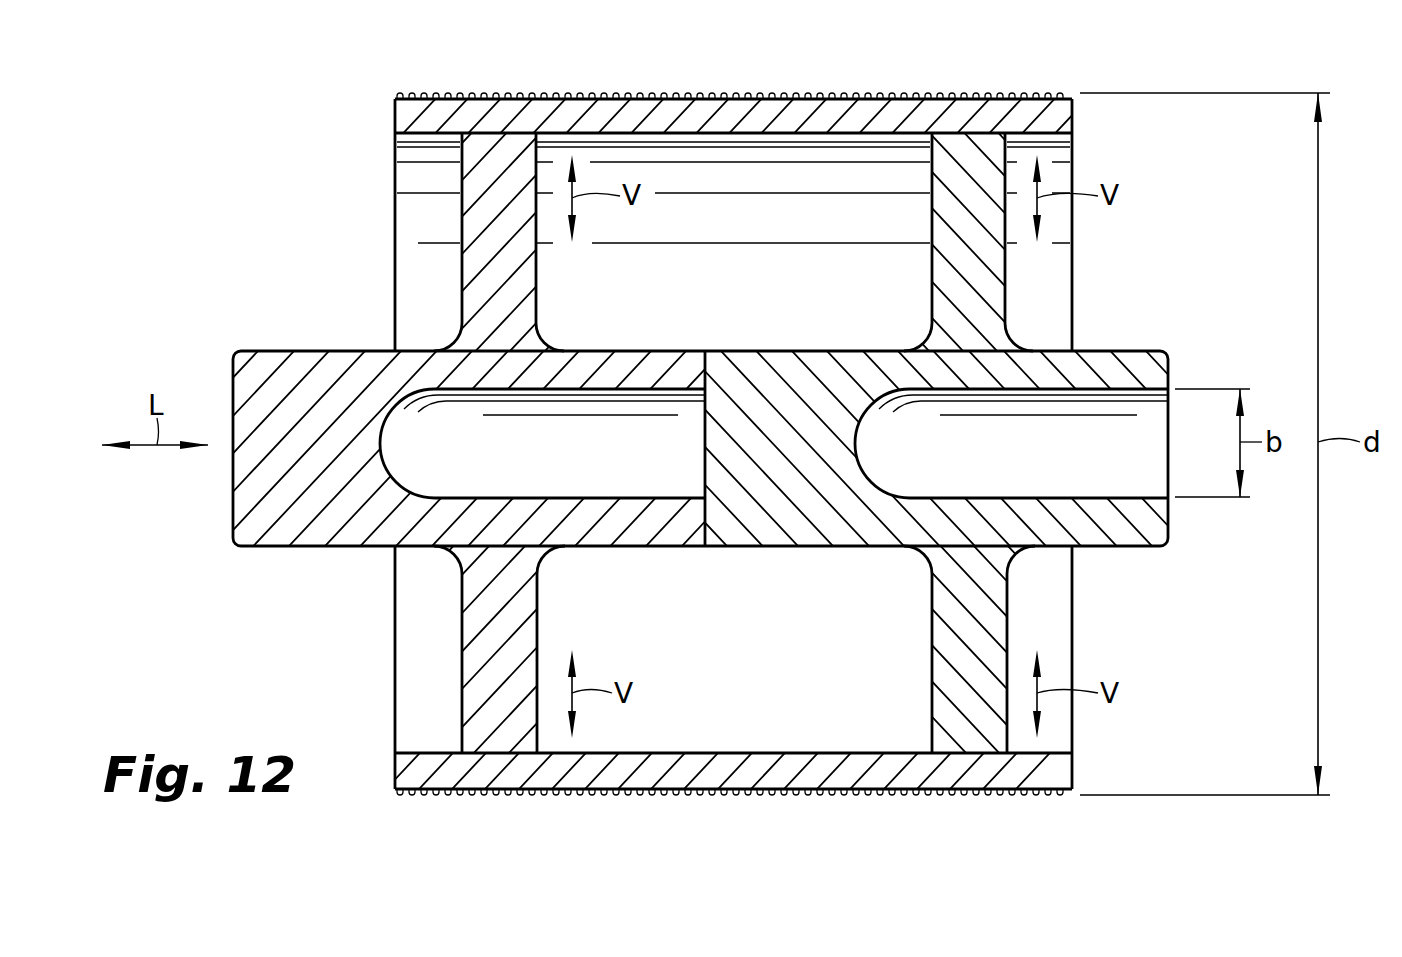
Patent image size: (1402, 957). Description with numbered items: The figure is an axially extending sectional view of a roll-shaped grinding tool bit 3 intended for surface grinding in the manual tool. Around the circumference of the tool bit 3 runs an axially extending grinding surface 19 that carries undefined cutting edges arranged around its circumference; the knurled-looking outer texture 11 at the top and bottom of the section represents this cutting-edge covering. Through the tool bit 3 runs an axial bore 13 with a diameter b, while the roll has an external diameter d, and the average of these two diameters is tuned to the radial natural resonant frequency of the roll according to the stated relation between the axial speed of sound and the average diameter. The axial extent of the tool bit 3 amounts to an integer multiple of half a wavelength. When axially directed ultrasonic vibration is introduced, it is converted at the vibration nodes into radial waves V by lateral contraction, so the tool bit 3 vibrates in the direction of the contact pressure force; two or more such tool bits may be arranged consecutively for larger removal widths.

The roll-shaped grinding tool bit 3 is at (448, 804).
The knurled surface 11 is at (721, 97).
The axial bore 13 is at (620, 482).
The grinding surface 19 is at (730, 768).